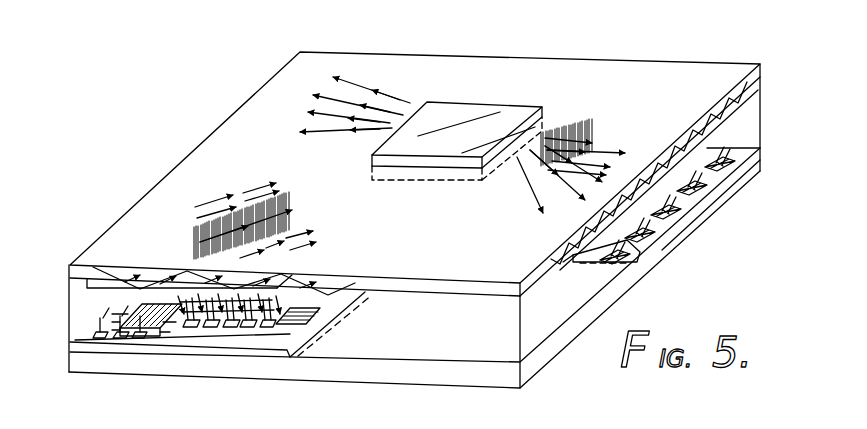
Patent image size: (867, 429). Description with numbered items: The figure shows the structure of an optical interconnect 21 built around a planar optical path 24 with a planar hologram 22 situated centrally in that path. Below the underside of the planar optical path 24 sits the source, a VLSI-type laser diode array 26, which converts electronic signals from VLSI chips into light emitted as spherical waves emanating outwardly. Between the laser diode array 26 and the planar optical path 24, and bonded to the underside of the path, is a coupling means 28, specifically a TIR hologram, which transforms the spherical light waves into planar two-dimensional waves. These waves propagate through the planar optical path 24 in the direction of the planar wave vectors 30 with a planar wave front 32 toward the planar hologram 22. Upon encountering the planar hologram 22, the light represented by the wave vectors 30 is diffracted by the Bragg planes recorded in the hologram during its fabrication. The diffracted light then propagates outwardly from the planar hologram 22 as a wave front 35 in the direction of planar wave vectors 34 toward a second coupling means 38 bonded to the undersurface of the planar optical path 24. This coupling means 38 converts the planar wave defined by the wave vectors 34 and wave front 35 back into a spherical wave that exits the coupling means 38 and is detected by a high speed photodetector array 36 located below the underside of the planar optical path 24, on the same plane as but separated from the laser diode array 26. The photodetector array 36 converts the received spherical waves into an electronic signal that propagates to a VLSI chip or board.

The optical interconnect 21 is at (435, 194).
The planar hologram 22 is at (448, 118).
The planar optical path 24 is at (723, 80).
The laser diode array 26 is at (185, 342).
The coupling means 28 is at (103, 288).
The planar wave vectors 30 is at (262, 190).
The wave front 32 is at (240, 227).
The planar wave vectors 34 is at (600, 140).
The wave front 35 is at (594, 163).
The photodetector array 36 is at (693, 200).
The coupling means 38 is at (573, 260).